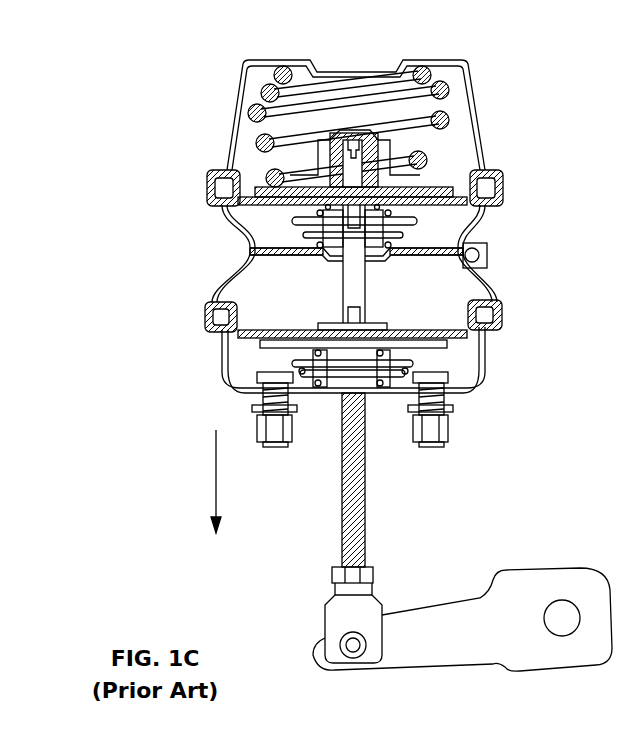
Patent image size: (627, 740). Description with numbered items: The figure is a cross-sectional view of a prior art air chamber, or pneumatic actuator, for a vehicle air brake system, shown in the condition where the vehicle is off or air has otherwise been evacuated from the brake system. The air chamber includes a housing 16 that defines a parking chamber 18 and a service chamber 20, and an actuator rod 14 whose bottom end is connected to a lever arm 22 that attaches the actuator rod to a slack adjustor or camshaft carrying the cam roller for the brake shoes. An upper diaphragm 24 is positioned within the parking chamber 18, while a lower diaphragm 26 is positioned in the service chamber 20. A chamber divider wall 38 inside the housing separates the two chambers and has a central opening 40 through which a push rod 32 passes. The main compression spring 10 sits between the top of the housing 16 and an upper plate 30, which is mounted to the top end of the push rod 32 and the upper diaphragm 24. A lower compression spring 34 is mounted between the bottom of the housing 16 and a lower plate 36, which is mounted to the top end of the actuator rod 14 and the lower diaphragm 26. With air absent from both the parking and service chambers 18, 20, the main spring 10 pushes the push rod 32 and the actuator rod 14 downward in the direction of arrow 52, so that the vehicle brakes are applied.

The main compression spring 10 is at (466, 84).
The actuator rod 14 is at (342, 510).
The housing 16 is at (484, 138).
The parking chamber 18 is at (443, 217).
The service chamber 20 is at (380, 258).
The lever arm 22 is at (455, 613).
The upper diaphragm 24 is at (262, 202).
The lower diaphragm 26 is at (220, 372).
The upper plate 30 is at (227, 170).
The push rod 32 is at (350, 288).
The lower compression spring 34 is at (445, 368).
The lower plate 36 is at (472, 347).
The chamber divider wall 38 is at (268, 262).
The central opening 40 is at (453, 288).
The arrow 52 is at (215, 482).